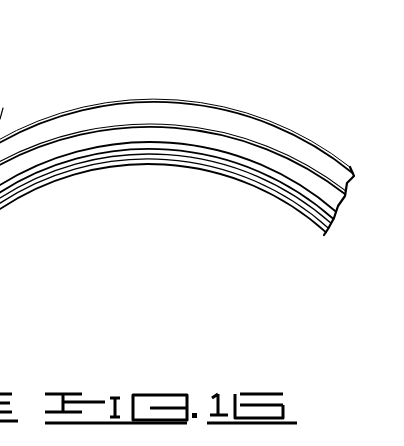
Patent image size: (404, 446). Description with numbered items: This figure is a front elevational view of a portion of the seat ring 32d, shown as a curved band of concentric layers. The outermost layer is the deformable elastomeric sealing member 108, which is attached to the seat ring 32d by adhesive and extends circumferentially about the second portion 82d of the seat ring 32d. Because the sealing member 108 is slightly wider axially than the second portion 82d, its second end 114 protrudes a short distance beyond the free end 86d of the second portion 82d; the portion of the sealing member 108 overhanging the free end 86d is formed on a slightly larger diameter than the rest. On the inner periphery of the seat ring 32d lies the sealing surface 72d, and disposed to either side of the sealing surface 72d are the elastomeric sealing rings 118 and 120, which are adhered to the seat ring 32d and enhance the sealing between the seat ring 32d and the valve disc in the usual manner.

The seat ring 32d is at (166, 81).
The sealing member 108 is at (219, 103).
The second end 114 is at (118, 112).
The free end 86d is at (235, 145).
The second portion 82d is at (200, 133).
The sealing ring 120 is at (104, 150).
The sealing ring 118 is at (62, 183).
The sealing surface 72d is at (22, 200).